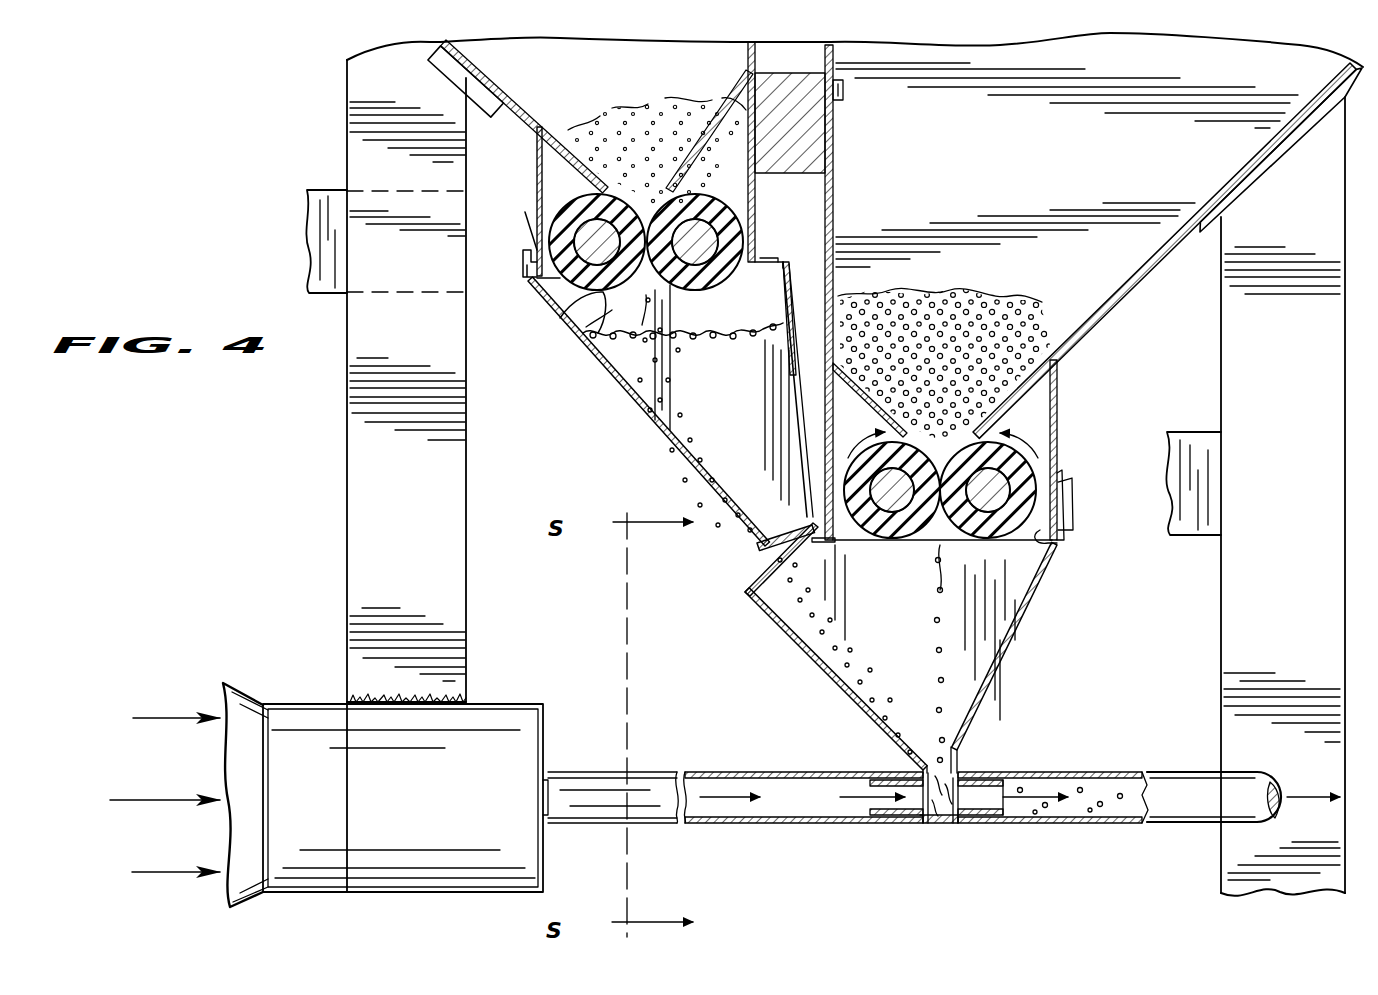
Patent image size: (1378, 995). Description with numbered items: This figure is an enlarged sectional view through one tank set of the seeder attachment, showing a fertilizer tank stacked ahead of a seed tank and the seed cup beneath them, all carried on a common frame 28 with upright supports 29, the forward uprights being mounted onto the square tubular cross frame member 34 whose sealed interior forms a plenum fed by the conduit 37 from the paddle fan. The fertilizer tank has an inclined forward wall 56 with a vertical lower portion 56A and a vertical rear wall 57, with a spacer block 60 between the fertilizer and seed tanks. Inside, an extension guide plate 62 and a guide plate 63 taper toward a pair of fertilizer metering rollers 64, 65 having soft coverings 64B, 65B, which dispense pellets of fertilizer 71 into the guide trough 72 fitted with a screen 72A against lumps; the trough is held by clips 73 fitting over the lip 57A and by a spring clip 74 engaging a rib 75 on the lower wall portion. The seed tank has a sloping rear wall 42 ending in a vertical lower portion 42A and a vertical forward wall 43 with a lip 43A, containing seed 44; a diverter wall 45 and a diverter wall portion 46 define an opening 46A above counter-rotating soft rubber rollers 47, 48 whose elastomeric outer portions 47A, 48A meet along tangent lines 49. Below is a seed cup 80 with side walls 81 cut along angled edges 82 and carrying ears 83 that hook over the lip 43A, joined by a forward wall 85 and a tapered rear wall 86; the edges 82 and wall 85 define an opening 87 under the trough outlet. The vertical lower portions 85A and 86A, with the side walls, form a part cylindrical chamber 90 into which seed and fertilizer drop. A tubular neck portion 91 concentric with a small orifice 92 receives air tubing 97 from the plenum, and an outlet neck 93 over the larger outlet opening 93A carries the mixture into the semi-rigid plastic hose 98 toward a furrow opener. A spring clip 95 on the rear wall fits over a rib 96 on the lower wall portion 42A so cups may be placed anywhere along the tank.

The common frame 28 is at (1240, 345).
The upright supports 29 is at (445, 583).
The square tubular cross frame member 34 is at (525, 728).
The conduit 37 is at (250, 692).
The rear wall 42 is at (1160, 240).
The vertical lower portion of rear wall 42A is at (1058, 390).
The forward wall 43 is at (835, 215).
The lip 43A is at (817, 544).
The seed 44 is at (938, 300).
The diverter wall 45 is at (870, 410).
The diverter wall portion 46 is at (1042, 360).
The opening 46A is at (945, 424).
The roller 47 is at (1010, 548).
The soft elastomeric outer portion 47A is at (1034, 474).
The roller 48 is at (880, 542).
The soft elastomeric outer portion 48A is at (904, 540).
The tangent lines 49 is at (968, 540).
The forward wall 56 is at (492, 68).
The lower portion of forward wall 56A is at (534, 206).
The rear wall 57 is at (758, 68).
The lip 57A is at (778, 272).
The spacer block 60 is at (810, 137).
The extension guide plate 62 is at (515, 106).
The guide plate 63 is at (726, 108).
The fertilizer metering roller 64 is at (735, 214).
The soft covering 64B is at (693, 292).
The fertilizer metering roller 65 is at (572, 326).
The soft covering 65B is at (590, 348).
The pellets of fertilizer 71 is at (630, 102).
The guide trough 72 is at (632, 402).
The screen 72A is at (684, 345).
The clips 73 is at (775, 262).
The spring clip 74 is at (521, 260).
The rib 75 is at (531, 281).
The seed cup 80 is at (1022, 629).
The side walls 81 is at (1004, 655).
The edges 82 is at (750, 584).
The ear 83 is at (810, 526).
The forward wall 85 is at (798, 648).
The lower portion of forward wall 85A is at (928, 822).
The rear wall 86 is at (985, 700).
The lower portion of rear wall 86A is at (960, 758).
The opening 87 is at (768, 563).
The part cylindrical chamber 90 is at (943, 812).
The tubular neck portion 91 is at (872, 814).
The orifice 92 is at (893, 816).
The outlet neck 93 is at (1007, 823).
The outlet opening 93A is at (968, 800).
The spring clip 95 is at (1064, 510).
The rib 96 is at (1058, 544).
The tubing 97 is at (723, 824).
The semi-rigid plastic hose 98 is at (1220, 803).